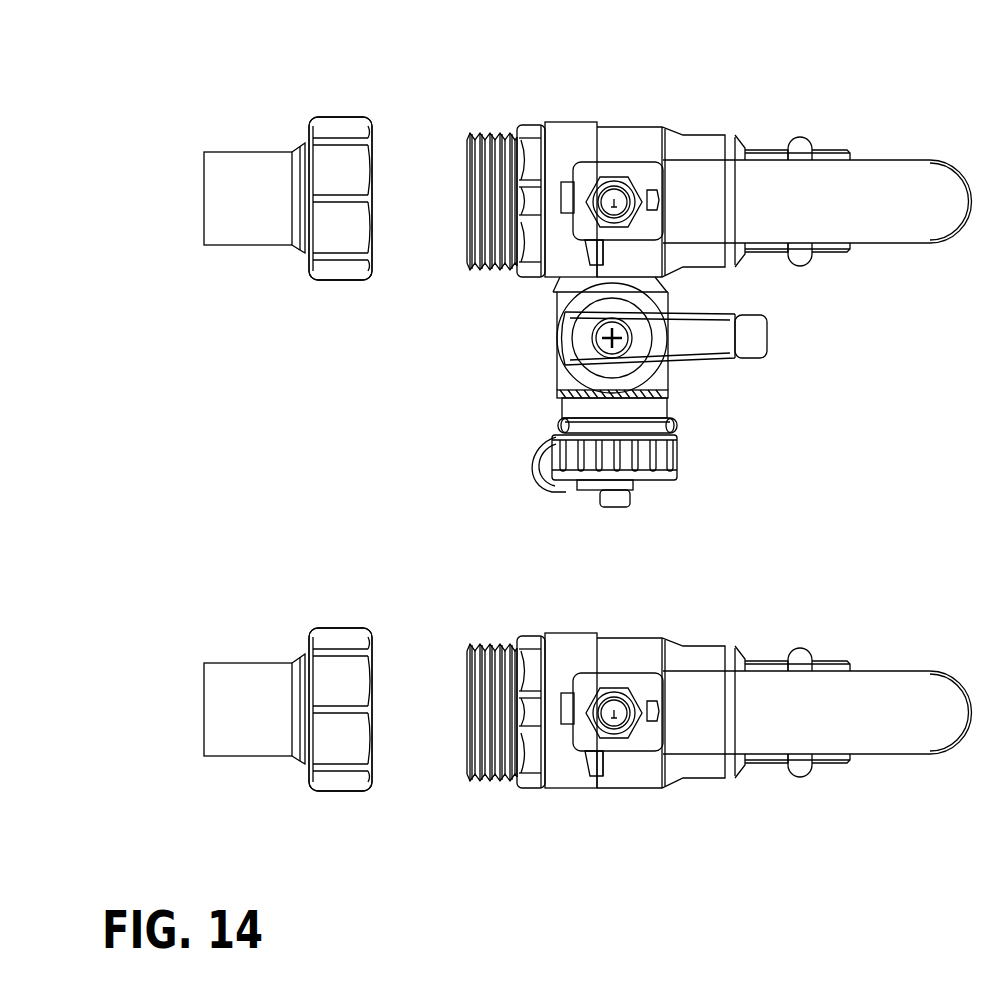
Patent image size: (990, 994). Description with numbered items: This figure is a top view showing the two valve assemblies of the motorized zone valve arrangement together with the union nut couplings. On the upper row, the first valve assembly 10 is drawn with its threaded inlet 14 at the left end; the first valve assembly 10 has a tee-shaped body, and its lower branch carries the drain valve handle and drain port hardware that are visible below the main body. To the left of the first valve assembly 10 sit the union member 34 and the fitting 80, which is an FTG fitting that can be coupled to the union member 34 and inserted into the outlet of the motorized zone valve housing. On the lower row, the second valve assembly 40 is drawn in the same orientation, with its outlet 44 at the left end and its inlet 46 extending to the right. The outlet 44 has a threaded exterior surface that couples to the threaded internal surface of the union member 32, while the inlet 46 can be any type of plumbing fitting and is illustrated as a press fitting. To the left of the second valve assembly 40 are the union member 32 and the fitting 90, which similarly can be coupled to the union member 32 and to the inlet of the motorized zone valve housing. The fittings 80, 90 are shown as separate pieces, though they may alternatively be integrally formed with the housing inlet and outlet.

The first valve assembly 10 is at (712, 272).
The inlet 14 is at (492, 137).
The union member 34 is at (328, 122).
The fitting 80 is at (237, 170).
The second valve assembly 40 is at (712, 668).
The outlet 44 is at (492, 648).
The inlet 46 is at (833, 662).
The union member 32 is at (328, 633).
The fitting 90 is at (237, 681).